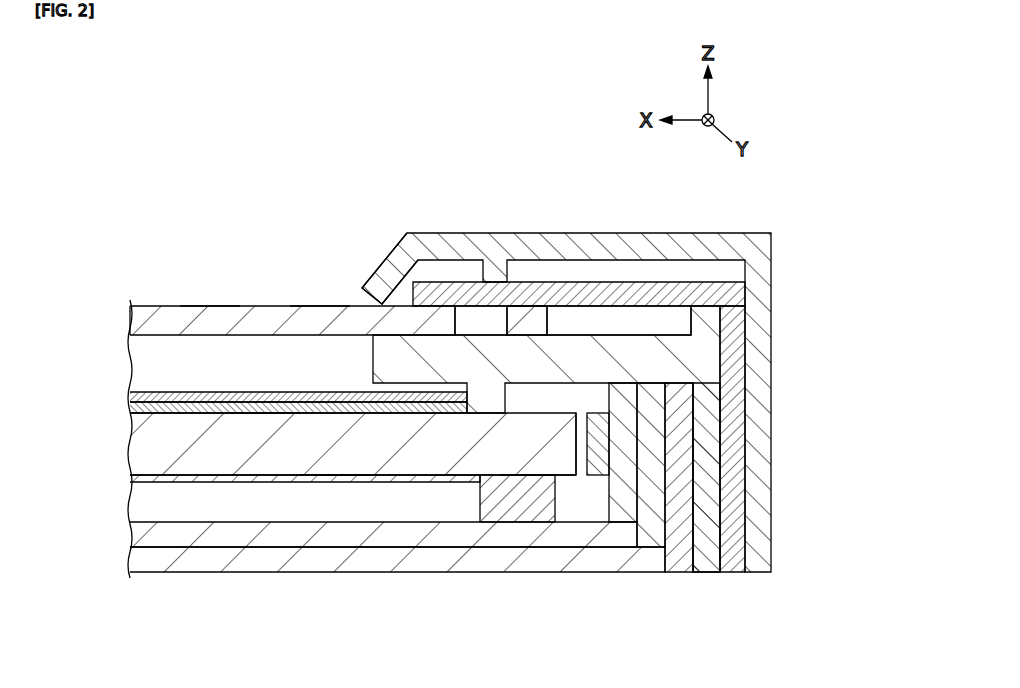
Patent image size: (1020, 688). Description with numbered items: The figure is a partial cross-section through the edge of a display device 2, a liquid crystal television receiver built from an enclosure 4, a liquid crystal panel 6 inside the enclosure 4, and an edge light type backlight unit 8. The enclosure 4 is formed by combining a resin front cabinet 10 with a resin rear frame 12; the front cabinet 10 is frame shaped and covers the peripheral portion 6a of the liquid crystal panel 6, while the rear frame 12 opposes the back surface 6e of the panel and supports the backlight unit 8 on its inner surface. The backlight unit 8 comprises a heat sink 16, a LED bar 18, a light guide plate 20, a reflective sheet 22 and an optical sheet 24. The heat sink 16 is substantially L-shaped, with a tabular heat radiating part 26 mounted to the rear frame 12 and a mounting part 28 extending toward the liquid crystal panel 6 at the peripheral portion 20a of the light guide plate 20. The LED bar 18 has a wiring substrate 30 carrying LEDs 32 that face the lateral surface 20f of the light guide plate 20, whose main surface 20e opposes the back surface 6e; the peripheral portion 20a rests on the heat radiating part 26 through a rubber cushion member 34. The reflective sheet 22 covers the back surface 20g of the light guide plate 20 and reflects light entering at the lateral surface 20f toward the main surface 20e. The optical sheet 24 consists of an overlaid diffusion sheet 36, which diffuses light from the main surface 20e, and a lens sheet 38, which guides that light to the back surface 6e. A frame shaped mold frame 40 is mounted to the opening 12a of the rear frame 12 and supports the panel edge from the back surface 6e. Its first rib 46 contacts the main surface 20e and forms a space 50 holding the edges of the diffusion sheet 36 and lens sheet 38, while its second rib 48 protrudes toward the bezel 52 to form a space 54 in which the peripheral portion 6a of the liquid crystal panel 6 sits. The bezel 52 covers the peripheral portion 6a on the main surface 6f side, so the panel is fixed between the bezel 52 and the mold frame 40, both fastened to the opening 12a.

The display device 2 is at (780, 224).
The enclosure 4 is at (829, 600).
The liquid crystal panel 6 is at (383, 288).
The peripheral portion of the liquid crystal panel 6a is at (320, 318).
The back surface of the liquid crystal panel 6e is at (131, 385).
The main surface of the liquid crystal panel 6f is at (208, 306).
The backlight unit 8 is at (116, 411).
The front cabinet 10 is at (757, 552).
The rear frame 12 is at (681, 572).
The opening of the rear frame 12a is at (747, 345).
The heat sink 16 is at (670, 598).
The LED bar 18 is at (826, 362).
The light guide plate 20 is at (243, 462).
The peripheral portion of the light guide plate in the short direction 20a is at (540, 462).
The main surface of the light guide plate 20e is at (268, 392).
The lateral surface of the light guide plate 20f is at (582, 465).
The back surface of the light guide plate 20g is at (333, 480).
The reflective sheet 22 is at (157, 480).
The optical sheet 24 is at (66, 290).
The heat radiating part 26 is at (603, 576).
The mounting part 28 is at (603, 542).
The wiring substrate 30 is at (668, 414).
The LED 32 is at (679, 386).
The cushion member 34 is at (515, 505).
The diffusion sheet 36 is at (160, 406).
The lens sheet 38 is at (150, 392).
The mold frame 40 is at (615, 350).
The first rib 46 is at (574, 330).
The second rib 48 is at (529, 318).
The space 50 is at (420, 367).
The bezel 52 is at (740, 318).
The space 54 is at (472, 317).